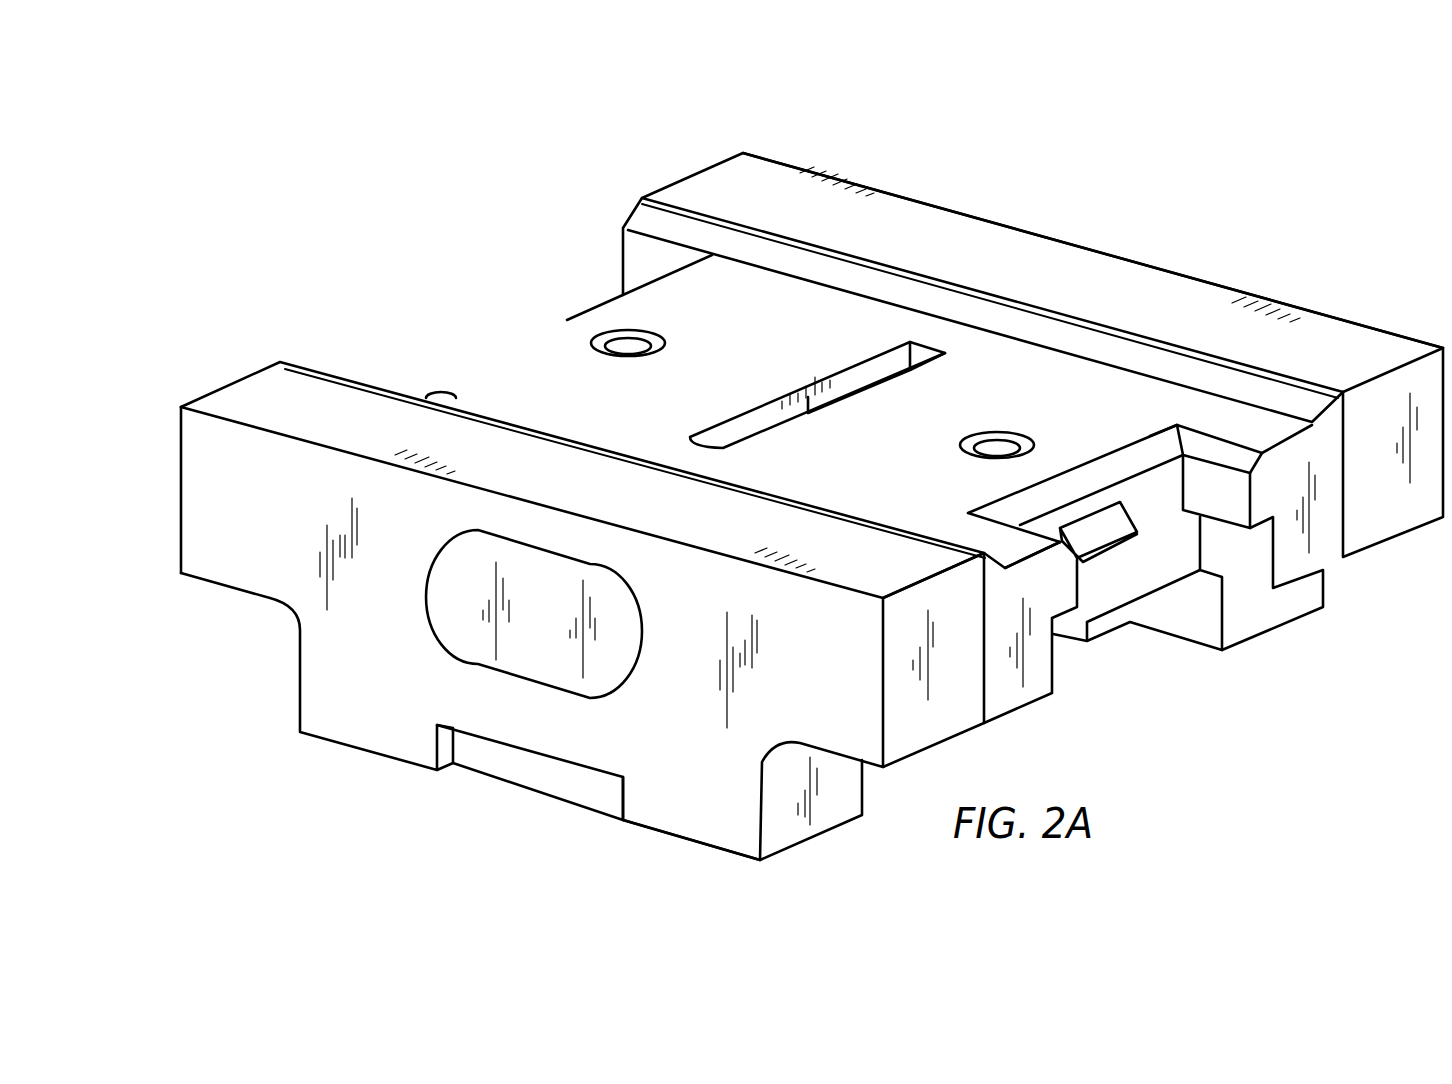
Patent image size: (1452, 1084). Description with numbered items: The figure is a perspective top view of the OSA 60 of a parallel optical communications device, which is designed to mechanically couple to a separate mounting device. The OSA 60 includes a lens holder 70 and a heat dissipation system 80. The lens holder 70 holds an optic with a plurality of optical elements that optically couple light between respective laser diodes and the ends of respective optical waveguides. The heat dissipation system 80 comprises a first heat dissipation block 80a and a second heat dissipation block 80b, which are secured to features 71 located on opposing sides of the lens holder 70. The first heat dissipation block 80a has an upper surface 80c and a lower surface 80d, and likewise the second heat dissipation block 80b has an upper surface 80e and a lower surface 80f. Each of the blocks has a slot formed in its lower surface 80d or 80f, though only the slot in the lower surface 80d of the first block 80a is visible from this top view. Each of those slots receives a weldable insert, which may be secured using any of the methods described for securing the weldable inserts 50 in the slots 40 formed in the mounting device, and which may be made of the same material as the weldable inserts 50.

The OSA 60 is at (1205, 183).
The lens holder 70 is at (565, 337).
The features 71 is at (460, 622).
The heat dissipation system 80 is at (712, 180).
The first heat dissipation block 80a is at (185, 400).
The second heat dissipation block 80b is at (925, 202).
The upper surface 80c is at (372, 438).
The lower surface 80d is at (688, 843).
The upper surface 80e is at (1358, 342).
The lower surface 80f is at (1257, 637).
The slots 40 is at (443, 753).
The weldable inserts 50 is at (540, 772).